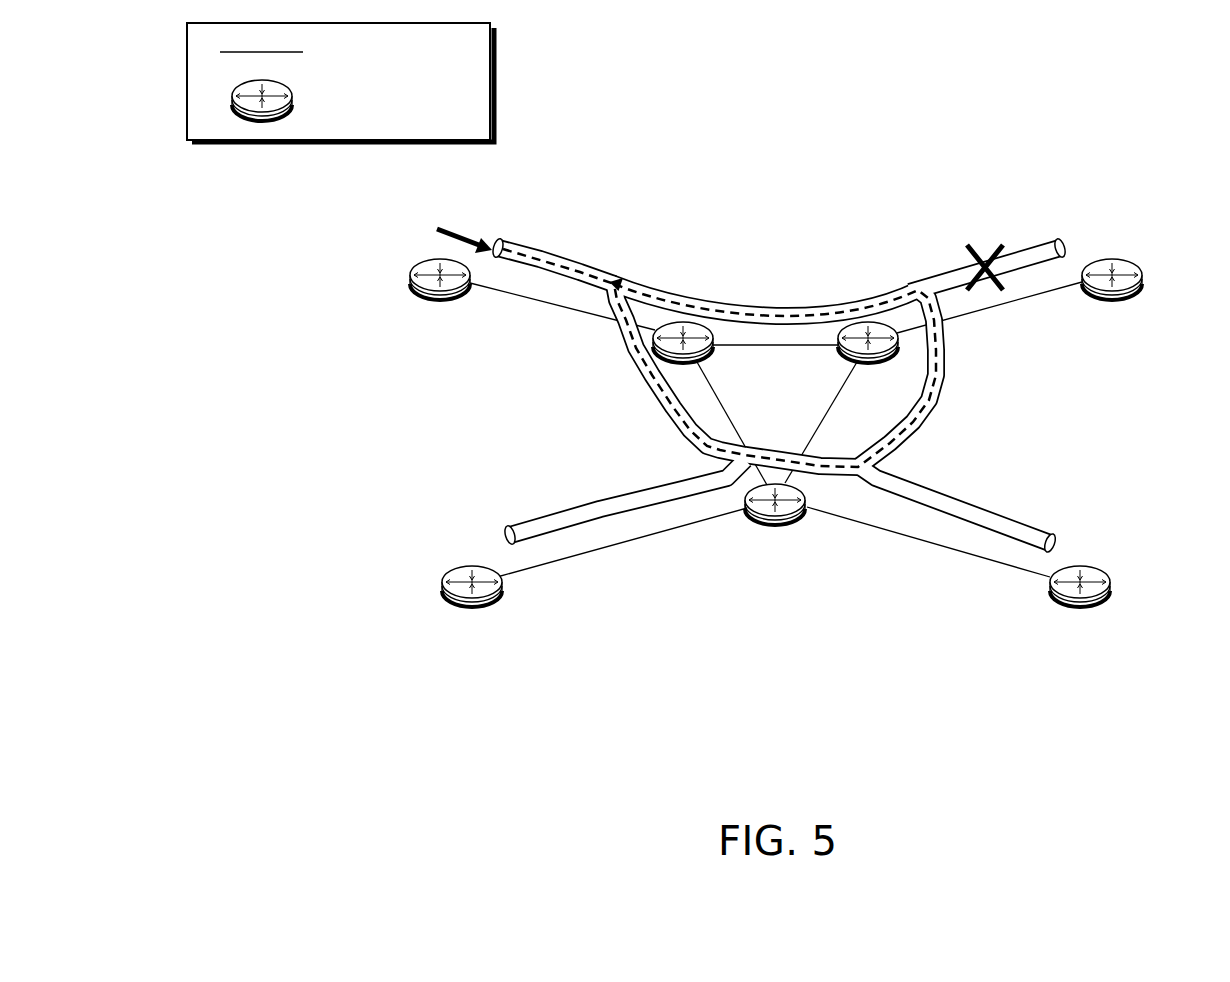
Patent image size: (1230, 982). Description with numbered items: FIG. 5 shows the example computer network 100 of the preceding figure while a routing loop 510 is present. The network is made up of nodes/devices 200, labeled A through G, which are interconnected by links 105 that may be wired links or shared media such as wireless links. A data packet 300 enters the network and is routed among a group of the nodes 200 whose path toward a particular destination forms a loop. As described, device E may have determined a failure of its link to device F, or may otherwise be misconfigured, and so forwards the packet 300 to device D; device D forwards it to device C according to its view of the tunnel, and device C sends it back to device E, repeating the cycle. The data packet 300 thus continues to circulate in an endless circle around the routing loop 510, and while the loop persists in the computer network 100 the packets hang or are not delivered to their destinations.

The computer network 100 is at (1043, 150).
The links 105 is at (651, 308).
The nodes/devices 200 is at (687, 343).
The data packet 300 is at (461, 224).
The routing loop 510 is at (641, 270).